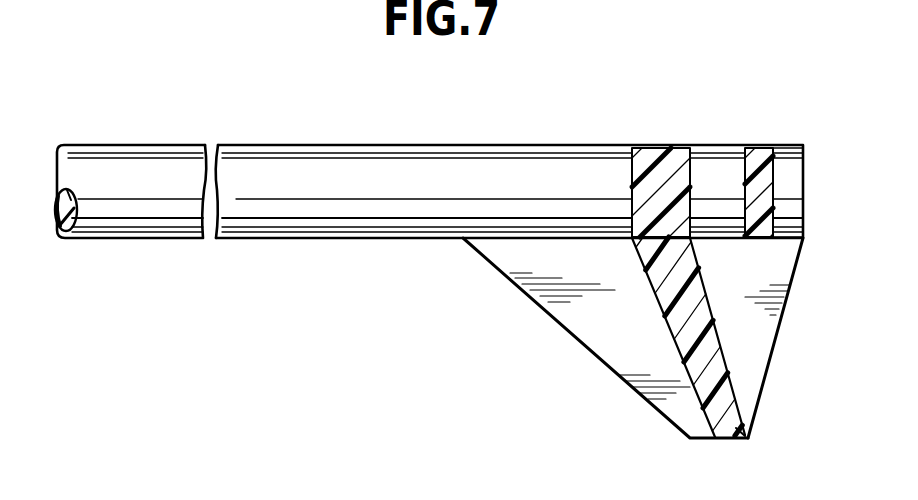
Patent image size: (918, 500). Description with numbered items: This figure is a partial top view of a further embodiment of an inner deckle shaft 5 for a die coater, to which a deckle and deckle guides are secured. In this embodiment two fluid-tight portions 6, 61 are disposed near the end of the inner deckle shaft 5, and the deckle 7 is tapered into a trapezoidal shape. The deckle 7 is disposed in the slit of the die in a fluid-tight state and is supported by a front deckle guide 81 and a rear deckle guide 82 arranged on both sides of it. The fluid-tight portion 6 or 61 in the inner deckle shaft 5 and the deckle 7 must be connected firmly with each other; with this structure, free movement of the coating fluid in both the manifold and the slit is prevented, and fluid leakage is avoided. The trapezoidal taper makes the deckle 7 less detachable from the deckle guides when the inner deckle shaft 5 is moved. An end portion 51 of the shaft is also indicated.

The inner deckle shaft 5 is at (490, 163).
The fiber end portion 51 is at (788, 180).
The fluid-tight portion 6 is at (655, 163).
The fluid-tight portion 61 is at (760, 163).
The deckle 7 is at (738, 432).
The front deckle guide 81 is at (763, 323).
The rear deckle guide 82 is at (587, 327).